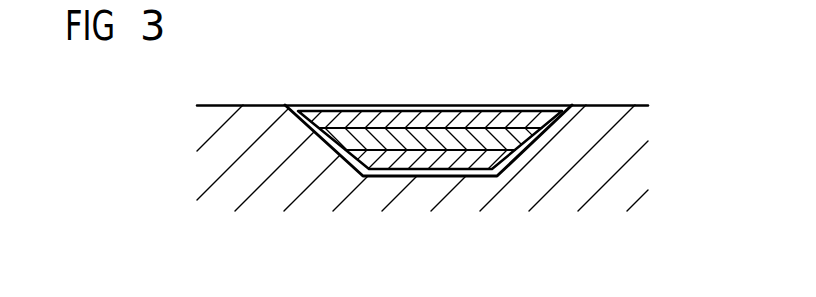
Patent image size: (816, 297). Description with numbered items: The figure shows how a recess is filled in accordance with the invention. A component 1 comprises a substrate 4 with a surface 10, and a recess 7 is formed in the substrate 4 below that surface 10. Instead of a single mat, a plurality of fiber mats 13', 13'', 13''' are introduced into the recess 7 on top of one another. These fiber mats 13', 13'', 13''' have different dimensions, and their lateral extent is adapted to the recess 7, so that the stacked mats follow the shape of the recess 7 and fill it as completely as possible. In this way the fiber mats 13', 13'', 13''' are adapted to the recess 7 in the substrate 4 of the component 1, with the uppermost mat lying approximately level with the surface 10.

The component 1 is at (149, 172).
The substrate 4 is at (620, 155).
The recess 7 is at (571, 100).
The surface 10 is at (253, 104).
The fiber mat 13' is at (432, 204).
The fiber mat 13'' is at (428, 91).
The fiber mat 13''' is at (421, 80).